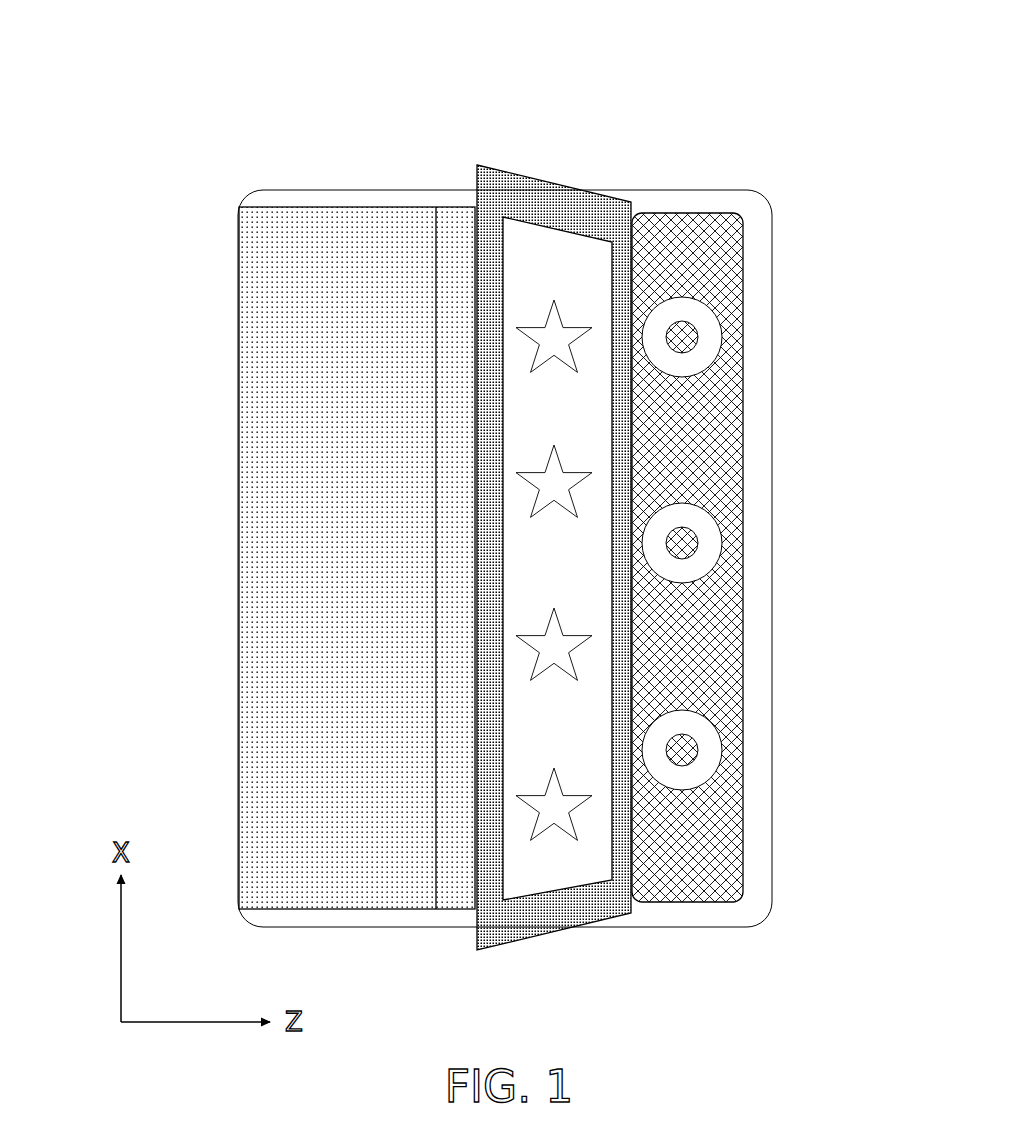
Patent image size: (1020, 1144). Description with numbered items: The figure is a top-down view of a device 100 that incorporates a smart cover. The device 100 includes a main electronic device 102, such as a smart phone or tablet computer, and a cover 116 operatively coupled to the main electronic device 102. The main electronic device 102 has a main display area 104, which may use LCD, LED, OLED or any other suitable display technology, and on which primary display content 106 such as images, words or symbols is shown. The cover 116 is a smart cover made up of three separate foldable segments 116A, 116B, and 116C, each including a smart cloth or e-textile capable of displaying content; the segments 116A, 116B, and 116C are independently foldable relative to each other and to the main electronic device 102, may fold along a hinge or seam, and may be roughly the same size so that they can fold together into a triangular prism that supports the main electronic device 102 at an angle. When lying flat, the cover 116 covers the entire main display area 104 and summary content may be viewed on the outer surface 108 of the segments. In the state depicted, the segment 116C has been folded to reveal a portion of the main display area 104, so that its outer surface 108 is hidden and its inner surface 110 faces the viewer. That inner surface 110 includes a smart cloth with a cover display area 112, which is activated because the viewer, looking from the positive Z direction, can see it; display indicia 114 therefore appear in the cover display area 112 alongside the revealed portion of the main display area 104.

The device 100 is at (240, 165).
The main electronic device 102 is at (765, 193).
The main display area 104 is at (713, 400).
The display content 106 is at (693, 567).
The outer surface 108 is at (458, 235).
The inner surface 110 is at (505, 188).
The cover display area 112 is at (563, 253).
The display indicia 114 is at (552, 802).
The cover 116 is at (240, 460).
The foldable segment 116A is at (298, 607).
The foldable segment 116B is at (455, 862).
The foldable segment 116C is at (535, 912).